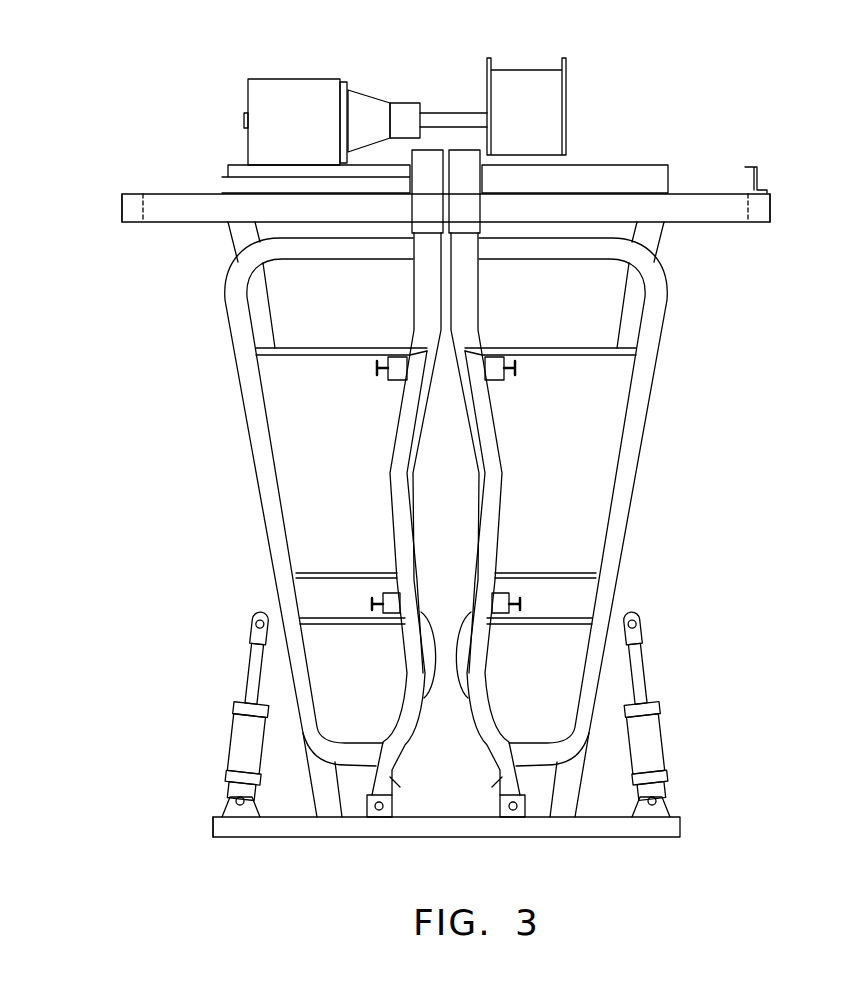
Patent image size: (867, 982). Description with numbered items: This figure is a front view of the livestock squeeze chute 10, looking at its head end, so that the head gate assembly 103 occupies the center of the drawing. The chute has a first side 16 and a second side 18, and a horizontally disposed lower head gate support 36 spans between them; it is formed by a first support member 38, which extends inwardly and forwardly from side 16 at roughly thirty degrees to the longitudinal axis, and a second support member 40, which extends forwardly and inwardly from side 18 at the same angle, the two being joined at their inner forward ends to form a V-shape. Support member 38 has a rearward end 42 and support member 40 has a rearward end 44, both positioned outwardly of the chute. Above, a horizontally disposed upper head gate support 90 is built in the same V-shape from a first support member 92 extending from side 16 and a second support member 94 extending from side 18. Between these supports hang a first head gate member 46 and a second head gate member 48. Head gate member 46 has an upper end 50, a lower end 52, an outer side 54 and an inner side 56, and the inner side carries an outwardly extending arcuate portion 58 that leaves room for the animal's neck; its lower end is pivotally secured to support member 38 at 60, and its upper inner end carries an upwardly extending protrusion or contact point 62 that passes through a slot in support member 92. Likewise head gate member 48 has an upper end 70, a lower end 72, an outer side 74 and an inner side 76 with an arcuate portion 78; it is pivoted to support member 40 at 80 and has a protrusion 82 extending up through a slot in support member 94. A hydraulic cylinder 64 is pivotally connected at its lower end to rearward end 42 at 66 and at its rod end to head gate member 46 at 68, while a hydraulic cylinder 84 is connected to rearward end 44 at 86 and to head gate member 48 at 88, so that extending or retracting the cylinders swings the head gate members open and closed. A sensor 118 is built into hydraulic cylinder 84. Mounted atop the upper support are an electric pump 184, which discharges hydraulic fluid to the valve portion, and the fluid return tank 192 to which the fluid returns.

The livestock squeeze chute 10 is at (720, 128).
The first side 16 is at (242, 456).
The second side 18 is at (652, 490).
The lower head gate support 36 is at (322, 848).
The first support member 38 is at (270, 833).
The second support member 40 is at (612, 828).
The rearward end of first support member 42 is at (235, 830).
The rearward end of second support member 44 is at (690, 827).
The first head gate member 46 is at (268, 543).
The second head gate member 48 is at (625, 527).
The upper end of first head gate member 50 is at (355, 255).
The lower end of first head gate member 52 is at (392, 778).
The outer side of first head gate member 54 is at (285, 572).
The inner side of first head gate member 56 is at (432, 632).
The arcuate portion 58 is at (385, 497).
The pivot connection 60 is at (378, 812).
The protrusion or contact point 62 is at (427, 160).
The hydraulic cylinder 64 is at (232, 740).
The pivot connection 66 is at (232, 800).
The pivot connection 68 is at (255, 620).
The upper end of second head gate member 70 is at (575, 256).
The lower end of second head gate member 72 is at (518, 780).
The outer side of second head gate member 74 is at (628, 466).
The inner side of second head gate member 76 is at (458, 640).
The arcuate portion 78 is at (520, 488).
The pivot connection 80 is at (515, 812).
The protrusion or contact point 82 is at (468, 167).
The hydraulic cylinder 84 is at (662, 740).
The pivot connection 86 is at (662, 800).
The pivot connection 88 is at (640, 625).
The upper head gate support 90 is at (698, 190).
The first support member 92 is at (215, 213).
The second support member 94 is at (672, 208).
The head gate assembly 103 is at (677, 378).
The sensor 118 is at (662, 772).
The electric pump 184 is at (265, 105).
The fluid return tank 192 is at (556, 88).